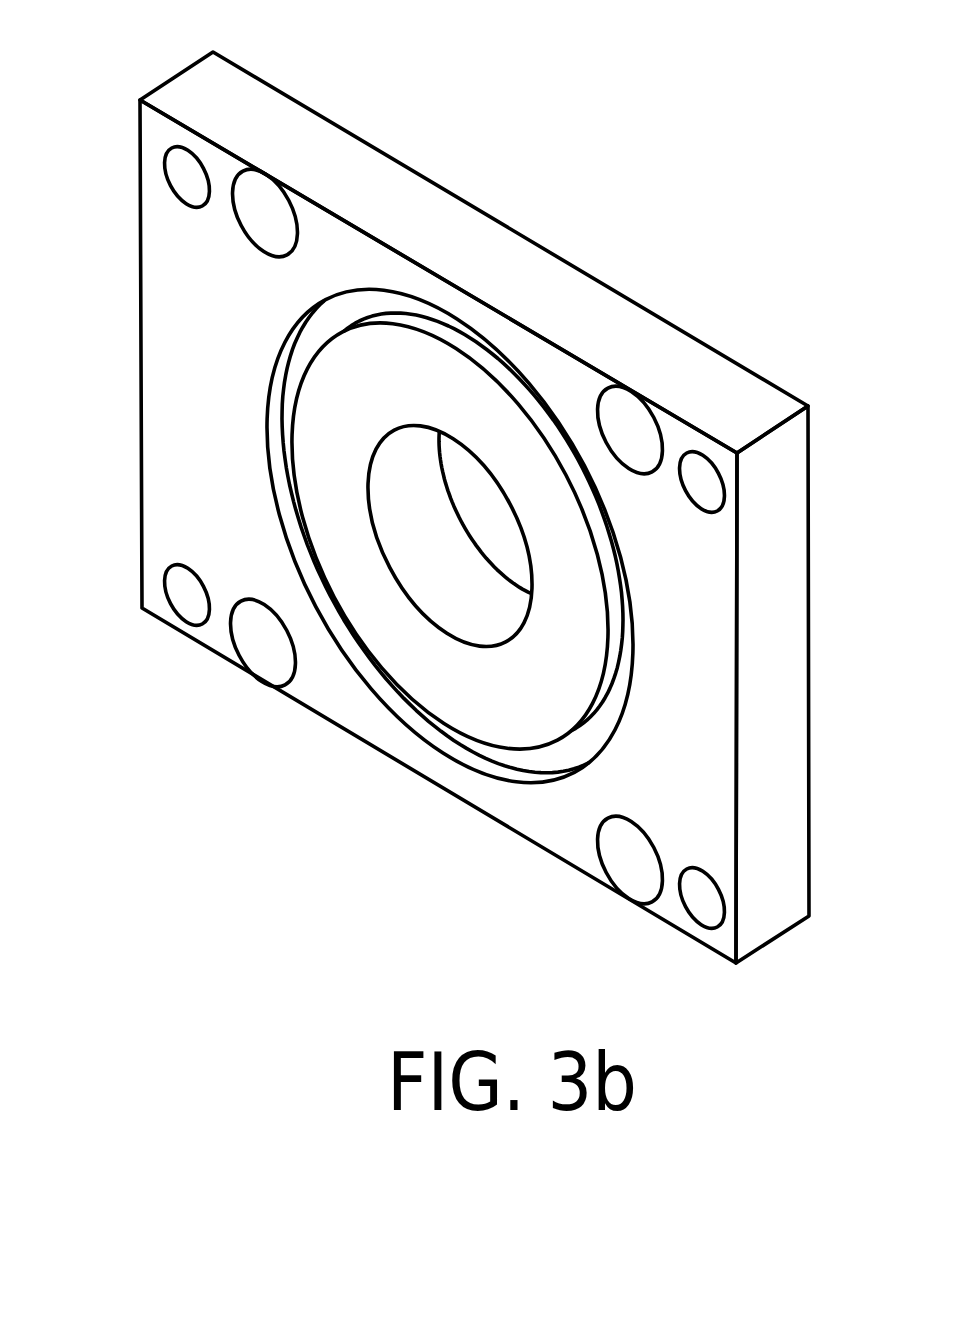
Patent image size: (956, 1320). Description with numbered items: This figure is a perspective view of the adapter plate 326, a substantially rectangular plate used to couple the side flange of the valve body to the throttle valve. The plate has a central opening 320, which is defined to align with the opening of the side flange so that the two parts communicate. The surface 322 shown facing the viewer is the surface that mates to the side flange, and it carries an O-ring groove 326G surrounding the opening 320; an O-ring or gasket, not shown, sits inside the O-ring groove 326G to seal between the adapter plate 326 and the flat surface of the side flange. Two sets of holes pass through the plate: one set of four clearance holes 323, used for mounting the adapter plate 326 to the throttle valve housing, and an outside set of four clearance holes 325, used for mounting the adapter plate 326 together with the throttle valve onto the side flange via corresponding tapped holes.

The opening 320 is at (433, 583).
The surface 322 is at (575, 818).
The clearance holes 323 is at (267, 202).
The clearance holes 325 is at (705, 473).
The adapter plate 326 is at (465, 232).
The O-ring groove 326G is at (485, 745).